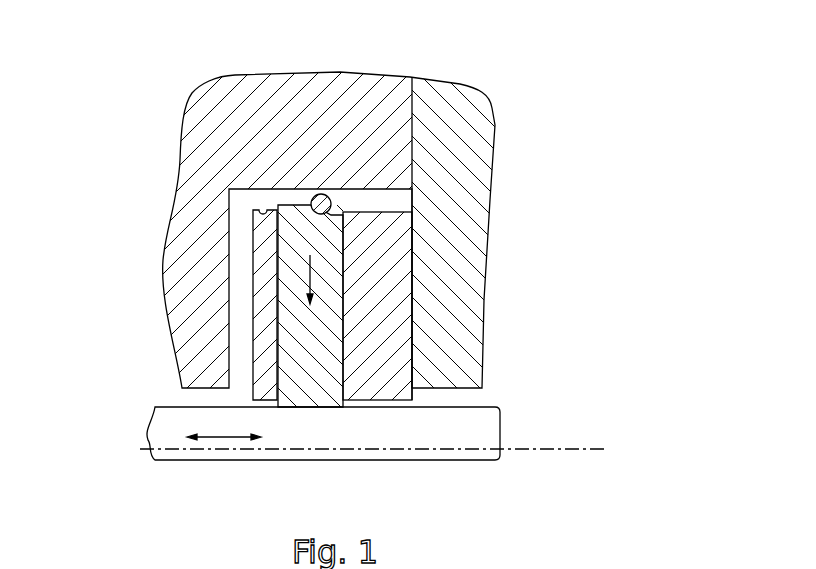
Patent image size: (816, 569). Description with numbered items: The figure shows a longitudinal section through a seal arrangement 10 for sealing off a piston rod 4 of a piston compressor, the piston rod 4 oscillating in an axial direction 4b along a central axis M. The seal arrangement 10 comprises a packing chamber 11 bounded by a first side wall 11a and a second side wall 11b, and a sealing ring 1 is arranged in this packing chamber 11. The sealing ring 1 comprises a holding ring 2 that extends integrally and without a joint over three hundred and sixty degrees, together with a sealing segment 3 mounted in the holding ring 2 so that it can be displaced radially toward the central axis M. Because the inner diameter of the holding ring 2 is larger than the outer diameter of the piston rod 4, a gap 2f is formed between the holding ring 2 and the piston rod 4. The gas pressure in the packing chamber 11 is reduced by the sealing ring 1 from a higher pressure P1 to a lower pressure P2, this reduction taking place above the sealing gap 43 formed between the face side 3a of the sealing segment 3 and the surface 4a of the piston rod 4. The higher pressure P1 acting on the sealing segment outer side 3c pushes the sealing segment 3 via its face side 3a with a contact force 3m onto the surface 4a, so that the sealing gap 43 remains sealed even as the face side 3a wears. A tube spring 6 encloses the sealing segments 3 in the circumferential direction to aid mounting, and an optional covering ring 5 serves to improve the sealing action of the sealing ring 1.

The sealing ring 1 is at (332, 277).
The holding ring 2 is at (376, 361).
The gap 2f is at (393, 400).
The sealing segment 3 is at (317, 277).
The face side 3a is at (340, 416).
The sealing segment outer side 3c is at (303, 211).
The contact force 3m is at (310, 280).
The piston rod 4 is at (352, 430).
The surface 4a is at (207, 395).
The axial direction 4b is at (222, 438).
The sealing gap 43 is at (322, 407).
The covering ring 5 is at (267, 290).
The tube spring 6 is at (324, 194).
The seal arrangement 10 is at (402, 277).
The packing chamber 11 is at (402, 217).
The first side wall 11a is at (490, 132).
The second side wall 11b is at (207, 255).
The higher pressure P1 is at (190, 397).
The lower pressure P2 is at (478, 397).
The central axis M is at (597, 451).